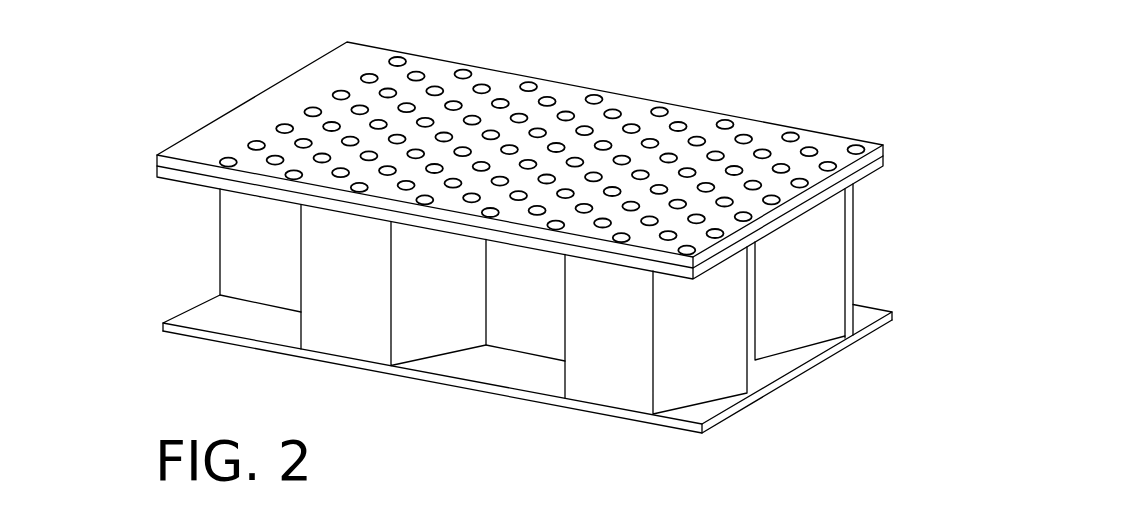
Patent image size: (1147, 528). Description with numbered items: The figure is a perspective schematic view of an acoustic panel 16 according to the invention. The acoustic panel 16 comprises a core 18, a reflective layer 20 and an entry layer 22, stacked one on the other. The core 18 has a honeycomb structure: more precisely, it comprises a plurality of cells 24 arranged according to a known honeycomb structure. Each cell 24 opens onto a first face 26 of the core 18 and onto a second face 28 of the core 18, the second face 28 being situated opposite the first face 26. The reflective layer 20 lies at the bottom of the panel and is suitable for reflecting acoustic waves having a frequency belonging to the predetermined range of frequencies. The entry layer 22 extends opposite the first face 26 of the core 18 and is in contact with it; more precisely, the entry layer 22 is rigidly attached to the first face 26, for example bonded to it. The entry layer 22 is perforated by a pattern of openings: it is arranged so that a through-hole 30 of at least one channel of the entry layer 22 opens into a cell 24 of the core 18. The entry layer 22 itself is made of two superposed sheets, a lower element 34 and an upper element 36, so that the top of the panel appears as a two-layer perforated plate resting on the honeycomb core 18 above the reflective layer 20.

The acoustic panel 16 is at (927, 227).
The core 18 is at (248, 257).
The reflective layer 20 is at (458, 389).
The entry layer 22 is at (616, 91).
The cell 24 is at (713, 348).
The first face 26 is at (180, 184).
The second face 28 is at (213, 289).
The through-hole 30 is at (811, 146).
The lower element 34 is at (878, 172).
The upper element 36 is at (886, 145).